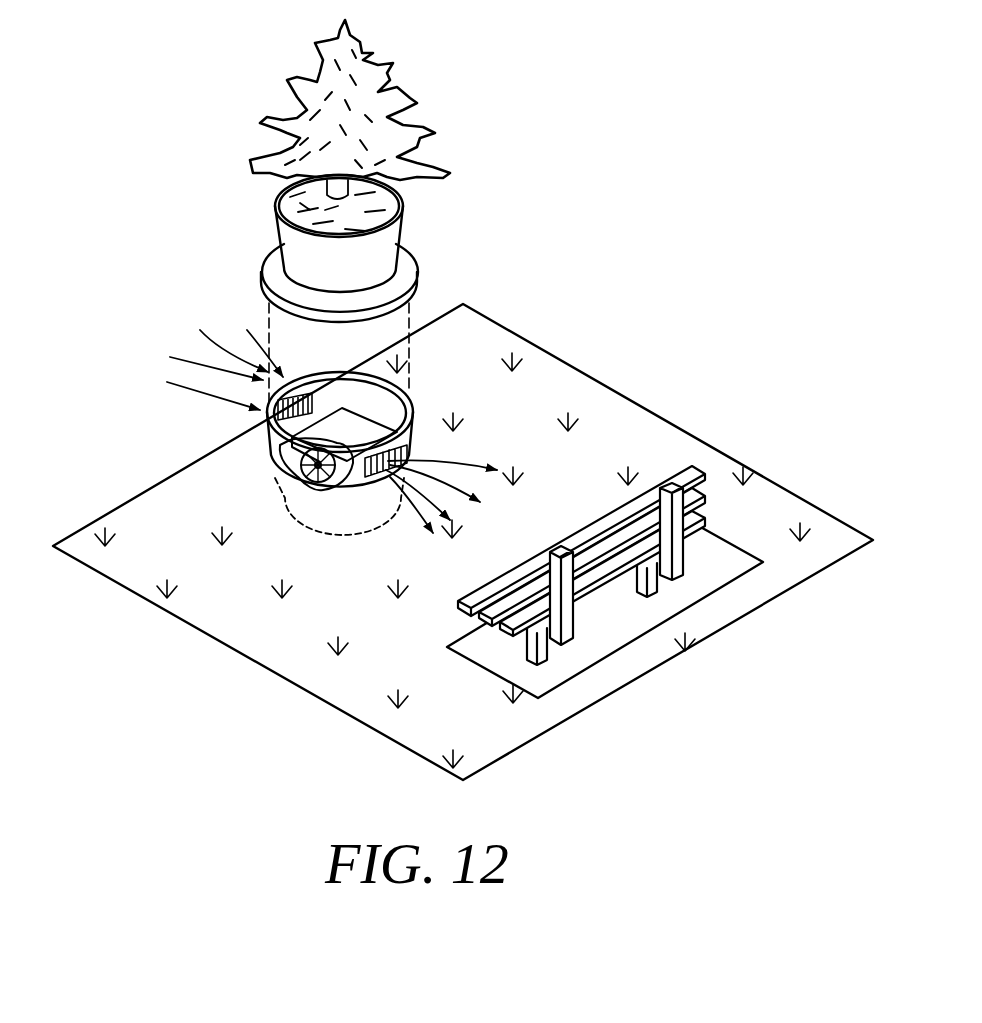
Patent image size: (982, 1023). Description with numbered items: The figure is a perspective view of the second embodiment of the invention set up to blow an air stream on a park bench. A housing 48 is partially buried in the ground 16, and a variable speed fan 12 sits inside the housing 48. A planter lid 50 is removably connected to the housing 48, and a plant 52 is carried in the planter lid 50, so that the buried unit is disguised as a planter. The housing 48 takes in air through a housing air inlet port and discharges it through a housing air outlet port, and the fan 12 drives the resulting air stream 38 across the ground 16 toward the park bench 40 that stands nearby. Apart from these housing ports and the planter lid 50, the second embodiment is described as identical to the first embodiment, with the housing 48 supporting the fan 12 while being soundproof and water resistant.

The variable speed fan 12 is at (395, 392).
The ground 16 is at (623, 397).
The air stream 38 is at (420, 513).
The park bench 40 is at (683, 463).
The housing 48 is at (377, 418).
The planter lid 50 is at (407, 248).
The plant 52 is at (402, 92).